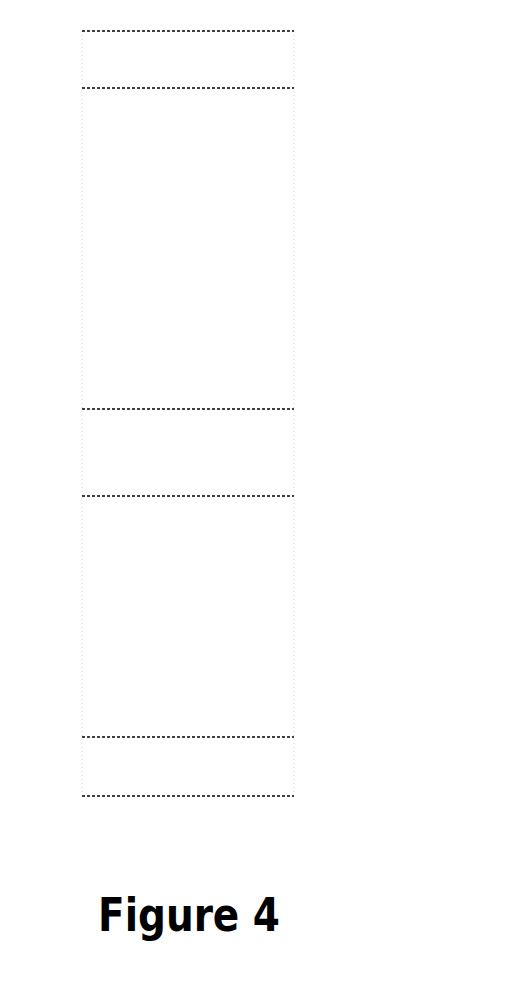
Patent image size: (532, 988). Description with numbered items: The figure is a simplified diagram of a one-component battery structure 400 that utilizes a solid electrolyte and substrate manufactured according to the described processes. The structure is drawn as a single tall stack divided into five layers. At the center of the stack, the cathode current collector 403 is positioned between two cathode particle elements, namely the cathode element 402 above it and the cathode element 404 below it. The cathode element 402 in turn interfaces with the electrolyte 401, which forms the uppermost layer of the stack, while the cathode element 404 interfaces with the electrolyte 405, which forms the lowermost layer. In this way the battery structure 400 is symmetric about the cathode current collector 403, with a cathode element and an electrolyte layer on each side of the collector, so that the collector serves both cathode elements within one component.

The data structure / packet 400 is at (400, 338).
The electrolyte 401 is at (176, 68).
The cathode element 402 is at (176, 256).
The cathode current collector 403 is at (176, 460).
The cathode element 404 is at (176, 624).
The electrolyte 405 is at (176, 774).